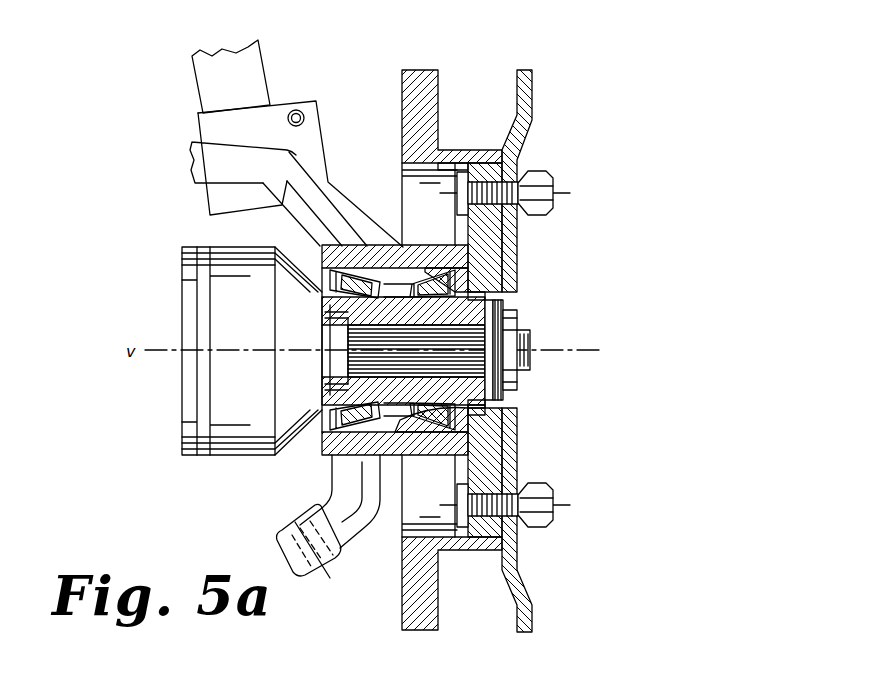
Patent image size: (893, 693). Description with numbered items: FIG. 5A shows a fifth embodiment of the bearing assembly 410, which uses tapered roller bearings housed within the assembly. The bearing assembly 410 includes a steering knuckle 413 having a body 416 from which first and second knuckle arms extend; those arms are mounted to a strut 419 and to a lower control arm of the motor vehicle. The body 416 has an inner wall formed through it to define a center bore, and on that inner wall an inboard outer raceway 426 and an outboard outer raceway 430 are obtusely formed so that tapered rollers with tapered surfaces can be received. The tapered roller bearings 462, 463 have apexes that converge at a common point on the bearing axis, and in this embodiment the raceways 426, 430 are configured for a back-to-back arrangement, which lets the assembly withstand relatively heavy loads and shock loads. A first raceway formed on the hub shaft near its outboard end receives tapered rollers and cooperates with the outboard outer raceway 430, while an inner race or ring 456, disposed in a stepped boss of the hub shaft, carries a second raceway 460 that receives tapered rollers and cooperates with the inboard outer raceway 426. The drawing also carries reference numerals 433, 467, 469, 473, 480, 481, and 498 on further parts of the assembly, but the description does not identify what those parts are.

The bearing assembly 410 is at (135, 88).
The steering knuckle 413 is at (360, 194).
The body 416 is at (457, 250).
The strut 419 is at (245, 94).
The inboard outer raceway 426 is at (330, 296).
The outboard outer raceway 430 is at (488, 300).
The retaining ring 433 is at (500, 422).
The inner race or ring 456 is at (323, 348).
The second raceway 460 is at (505, 310).
The tapered roller bearing 462 is at (434, 245).
The tapered roller bearing 463 is at (323, 312).
The spacer 467 is at (478, 455).
The hose fitting 469 is at (322, 456).
The drum 473 is at (176, 268).
The flange 480 is at (437, 92).
The mounting plate 481 is at (520, 82).
The hub nut 498 is at (505, 372).